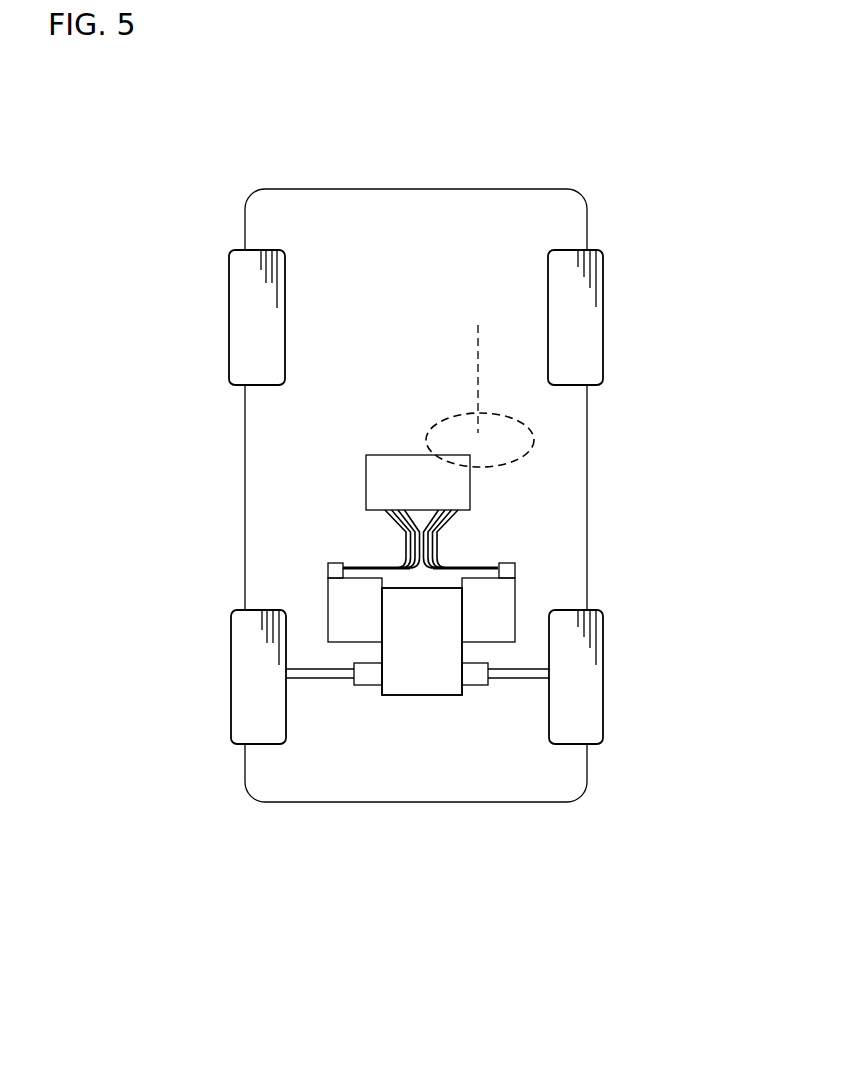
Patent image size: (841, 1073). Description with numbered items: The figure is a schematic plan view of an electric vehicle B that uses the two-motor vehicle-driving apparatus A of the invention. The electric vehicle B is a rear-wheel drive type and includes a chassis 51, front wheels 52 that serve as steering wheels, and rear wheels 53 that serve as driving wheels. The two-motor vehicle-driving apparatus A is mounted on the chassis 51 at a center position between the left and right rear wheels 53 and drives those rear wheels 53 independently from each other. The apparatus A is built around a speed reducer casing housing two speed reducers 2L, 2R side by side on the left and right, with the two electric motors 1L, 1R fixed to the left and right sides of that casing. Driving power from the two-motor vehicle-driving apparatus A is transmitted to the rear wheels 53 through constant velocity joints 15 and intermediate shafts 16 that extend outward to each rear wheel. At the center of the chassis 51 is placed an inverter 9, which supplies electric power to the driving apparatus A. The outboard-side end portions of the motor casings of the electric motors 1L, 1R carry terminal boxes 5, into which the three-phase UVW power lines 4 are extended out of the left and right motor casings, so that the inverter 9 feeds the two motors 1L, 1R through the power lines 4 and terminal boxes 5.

The electric vehicle B is at (413, 492).
The chassis 51 is at (497, 205).
The front wheels 52 is at (252, 337).
The rear wheels 53 is at (248, 700).
The inverter 9 is at (438, 486).
The three-phase UVW power lines 4 is at (475, 566).
The terminal boxes 5 is at (337, 572).
The electric motor 1L is at (340, 607).
The electric motor 1R is at (485, 605).
The speed reducer 2L is at (415, 657).
The speed reducer 2R is at (415, 657).
The two-motor vehicle-driving apparatus A is at (425, 748).
The constant velocity joints 15 is at (372, 676).
The intermediate shafts 16 is at (328, 672).